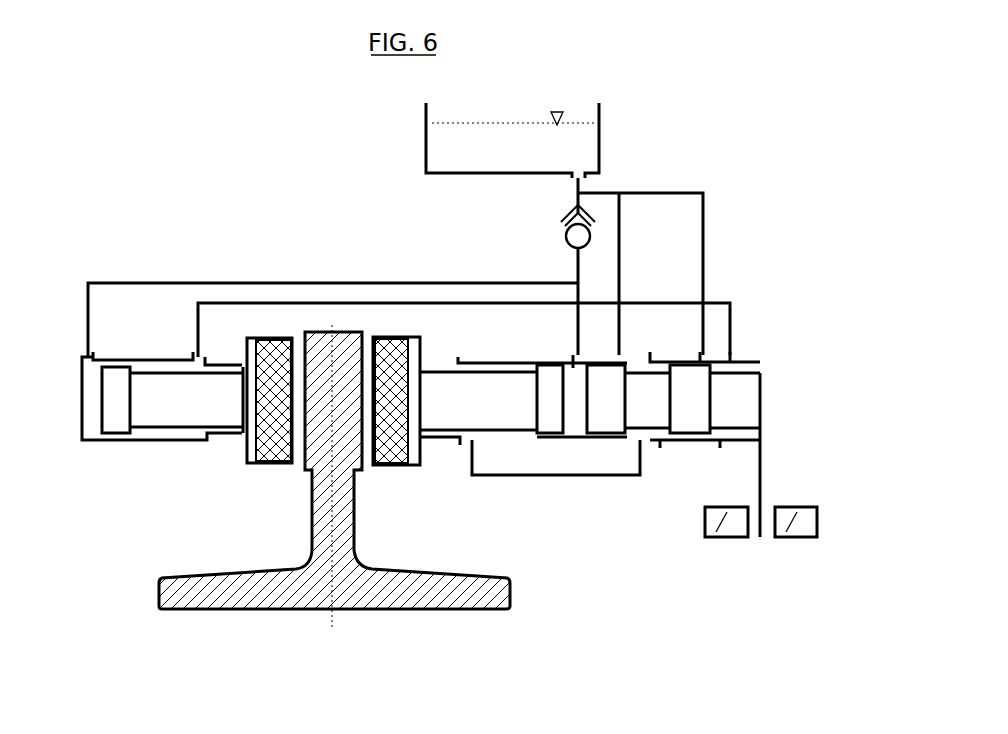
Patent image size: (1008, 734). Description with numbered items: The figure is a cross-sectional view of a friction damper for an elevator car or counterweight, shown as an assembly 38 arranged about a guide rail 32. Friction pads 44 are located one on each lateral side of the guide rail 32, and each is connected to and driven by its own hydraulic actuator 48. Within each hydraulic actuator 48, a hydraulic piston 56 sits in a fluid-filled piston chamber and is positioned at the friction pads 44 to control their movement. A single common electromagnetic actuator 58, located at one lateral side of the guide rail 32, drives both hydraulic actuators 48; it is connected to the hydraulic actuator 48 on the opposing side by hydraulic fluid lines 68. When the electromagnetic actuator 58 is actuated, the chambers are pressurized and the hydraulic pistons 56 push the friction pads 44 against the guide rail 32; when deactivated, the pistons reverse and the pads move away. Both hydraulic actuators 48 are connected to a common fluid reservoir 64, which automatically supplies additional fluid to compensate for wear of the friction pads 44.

The guide rail 32 is at (317, 552).
The hydraulic unit 38 is at (660, 153).
The friction pads 44 is at (265, 440).
The hydraulic actuator 48 is at (157, 398).
The hydraulic piston 56 is at (196, 403).
The electromagnetic actuator 58 is at (718, 400).
The fluid reservoir 64 is at (510, 161).
The hydraulic fluid lines 68 is at (333, 292).